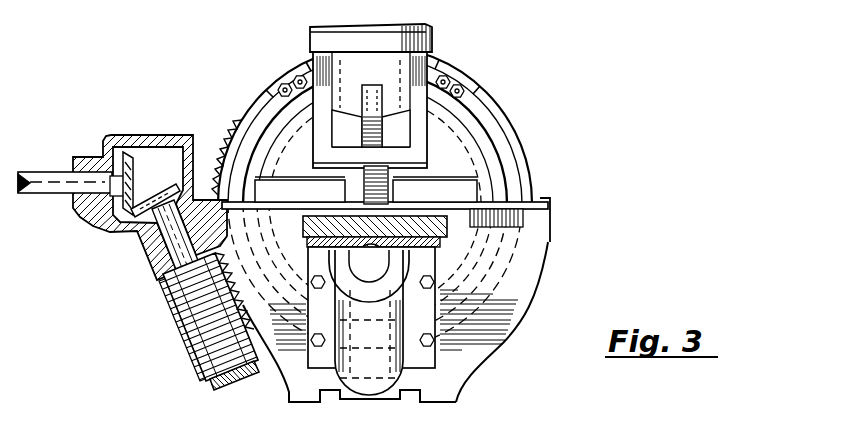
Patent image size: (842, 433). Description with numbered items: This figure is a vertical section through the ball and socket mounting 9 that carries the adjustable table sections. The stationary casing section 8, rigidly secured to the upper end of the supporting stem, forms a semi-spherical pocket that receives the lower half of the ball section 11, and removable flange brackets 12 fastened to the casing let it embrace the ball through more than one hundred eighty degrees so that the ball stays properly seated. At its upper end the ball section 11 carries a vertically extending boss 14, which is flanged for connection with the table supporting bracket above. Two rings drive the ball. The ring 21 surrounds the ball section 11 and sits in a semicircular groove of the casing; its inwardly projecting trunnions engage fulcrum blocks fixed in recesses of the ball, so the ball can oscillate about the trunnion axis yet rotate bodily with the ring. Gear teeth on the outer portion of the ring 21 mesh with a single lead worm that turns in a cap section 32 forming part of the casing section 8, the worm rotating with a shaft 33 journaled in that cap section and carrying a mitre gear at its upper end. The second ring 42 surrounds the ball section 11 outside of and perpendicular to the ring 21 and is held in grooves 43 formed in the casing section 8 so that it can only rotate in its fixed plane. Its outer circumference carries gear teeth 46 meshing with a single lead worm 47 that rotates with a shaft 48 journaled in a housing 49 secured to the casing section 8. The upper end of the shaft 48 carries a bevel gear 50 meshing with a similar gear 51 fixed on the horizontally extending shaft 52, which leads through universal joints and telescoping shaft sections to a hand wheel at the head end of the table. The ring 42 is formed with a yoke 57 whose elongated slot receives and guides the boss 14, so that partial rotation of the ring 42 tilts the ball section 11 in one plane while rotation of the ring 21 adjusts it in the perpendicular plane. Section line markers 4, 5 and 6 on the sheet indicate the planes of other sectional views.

The section line 4- 4 is at (155, 35).
The section line 5- 5 is at (372, 19).
The section line 6- 6 is at (278, 261).
The stationary casing section 8 is at (548, 237).
The ball and socket mounting 9 is at (538, 271).
The ball section 11 is at (458, 152).
The removable flange brackets 12 is at (483, 201).
The vertically extending boss 14 is at (371, 129).
The ring 21 is at (360, 88).
The cap section 32 is at (384, 244).
The shaft 33 is at (392, 326).
The second ring 42 is at (480, 113).
The grooves 43 is at (515, 292).
The gear teeth 46 is at (250, 254).
The single lead worm 47 is at (163, 297).
The shaft 48 is at (163, 252).
The housing 49 is at (95, 229).
The bevel gear 50 is at (164, 186).
The bevel gear 51 is at (128, 155).
The horizontally extending shaft 52 is at (33, 178).
The yoke 57 is at (452, 84).